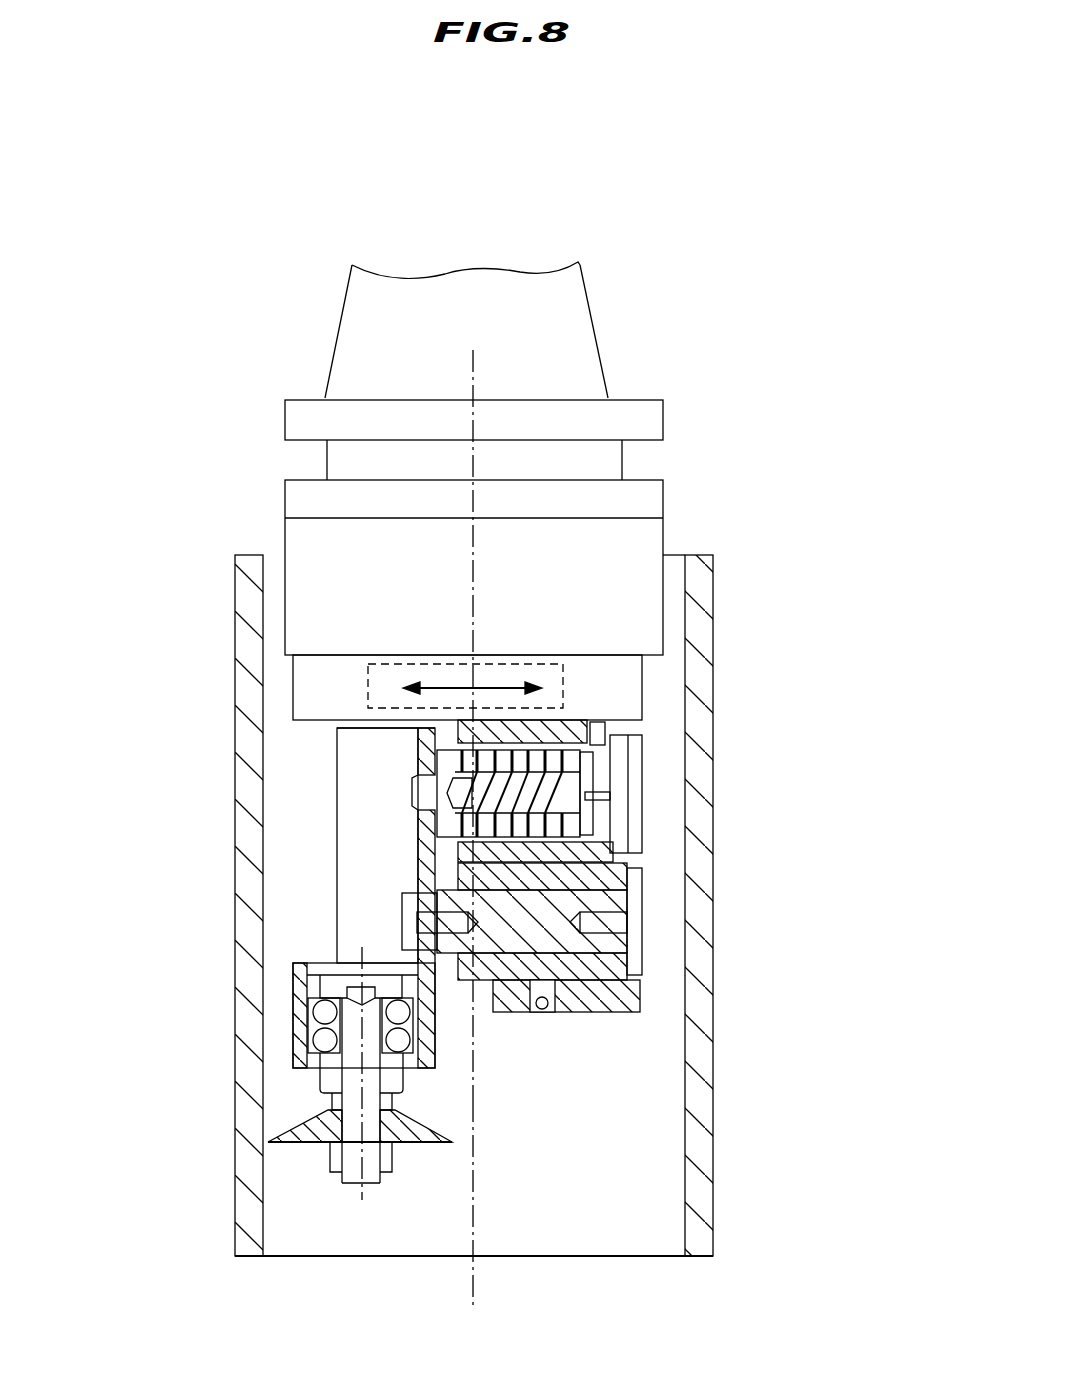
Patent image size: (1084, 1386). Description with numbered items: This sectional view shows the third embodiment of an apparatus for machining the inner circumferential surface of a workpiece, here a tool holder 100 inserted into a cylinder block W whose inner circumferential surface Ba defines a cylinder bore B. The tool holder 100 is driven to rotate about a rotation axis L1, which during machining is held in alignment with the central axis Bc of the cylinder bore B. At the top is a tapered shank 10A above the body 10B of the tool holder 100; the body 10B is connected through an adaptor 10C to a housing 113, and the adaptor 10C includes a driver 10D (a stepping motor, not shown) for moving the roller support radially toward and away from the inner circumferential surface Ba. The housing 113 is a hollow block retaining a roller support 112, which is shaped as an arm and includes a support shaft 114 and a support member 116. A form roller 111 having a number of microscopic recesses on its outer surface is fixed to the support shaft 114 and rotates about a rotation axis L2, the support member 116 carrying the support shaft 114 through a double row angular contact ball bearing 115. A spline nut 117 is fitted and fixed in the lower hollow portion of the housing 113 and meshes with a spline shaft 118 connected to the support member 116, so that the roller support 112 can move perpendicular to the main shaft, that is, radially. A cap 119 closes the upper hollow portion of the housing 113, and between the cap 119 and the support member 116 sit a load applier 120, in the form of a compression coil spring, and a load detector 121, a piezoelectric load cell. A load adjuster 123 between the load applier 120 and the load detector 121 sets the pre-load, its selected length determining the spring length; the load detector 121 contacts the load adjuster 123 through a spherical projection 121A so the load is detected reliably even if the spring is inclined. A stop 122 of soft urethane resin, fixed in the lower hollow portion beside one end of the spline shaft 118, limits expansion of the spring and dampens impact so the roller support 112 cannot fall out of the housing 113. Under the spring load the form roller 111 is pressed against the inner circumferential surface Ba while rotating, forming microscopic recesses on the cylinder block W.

The tool holder 100 is at (817, 268).
The tool holder taper 10A is at (557, 335).
The body 10B is at (630, 543).
The adaptor 10C is at (640, 700).
The driver 10D is at (368, 690).
The cylinder bore B is at (250, 932).
The inner circumferential surface Ba is at (268, 1218).
The cylinder block W is at (705, 1202).
The rotation axis L1 is at (468, 1228).
The central axis Bc is at (431, 1223).
The rotation axis L2 is at (360, 1185).
The form roller 111 is at (297, 1115).
The roller support 112 is at (337, 816).
The housing 113 is at (664, 872).
The support shaft 114 is at (363, 1193).
The double row angular contact ball bearing 115 is at (322, 1033).
The support member 116 is at (353, 763).
The spline nut 117 is at (597, 968).
The spline shaft 118 is at (487, 940).
The cap 119 is at (633, 770).
The load applier 120 is at (511, 760).
The load detector 121 is at (645, 834).
The spherical projection 121A is at (597, 792).
The stop 122 is at (635, 943).
The load adjuster 123 is at (555, 783).